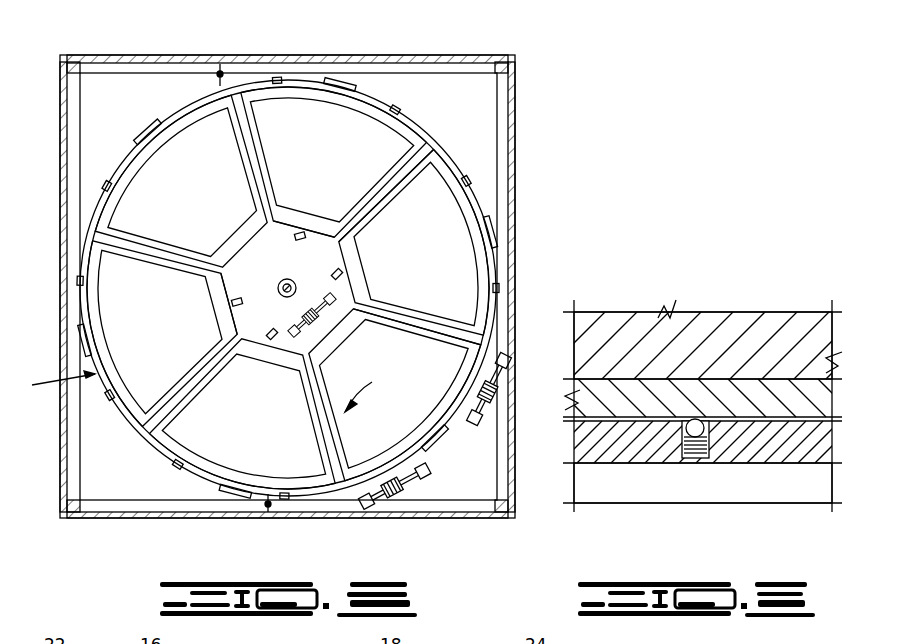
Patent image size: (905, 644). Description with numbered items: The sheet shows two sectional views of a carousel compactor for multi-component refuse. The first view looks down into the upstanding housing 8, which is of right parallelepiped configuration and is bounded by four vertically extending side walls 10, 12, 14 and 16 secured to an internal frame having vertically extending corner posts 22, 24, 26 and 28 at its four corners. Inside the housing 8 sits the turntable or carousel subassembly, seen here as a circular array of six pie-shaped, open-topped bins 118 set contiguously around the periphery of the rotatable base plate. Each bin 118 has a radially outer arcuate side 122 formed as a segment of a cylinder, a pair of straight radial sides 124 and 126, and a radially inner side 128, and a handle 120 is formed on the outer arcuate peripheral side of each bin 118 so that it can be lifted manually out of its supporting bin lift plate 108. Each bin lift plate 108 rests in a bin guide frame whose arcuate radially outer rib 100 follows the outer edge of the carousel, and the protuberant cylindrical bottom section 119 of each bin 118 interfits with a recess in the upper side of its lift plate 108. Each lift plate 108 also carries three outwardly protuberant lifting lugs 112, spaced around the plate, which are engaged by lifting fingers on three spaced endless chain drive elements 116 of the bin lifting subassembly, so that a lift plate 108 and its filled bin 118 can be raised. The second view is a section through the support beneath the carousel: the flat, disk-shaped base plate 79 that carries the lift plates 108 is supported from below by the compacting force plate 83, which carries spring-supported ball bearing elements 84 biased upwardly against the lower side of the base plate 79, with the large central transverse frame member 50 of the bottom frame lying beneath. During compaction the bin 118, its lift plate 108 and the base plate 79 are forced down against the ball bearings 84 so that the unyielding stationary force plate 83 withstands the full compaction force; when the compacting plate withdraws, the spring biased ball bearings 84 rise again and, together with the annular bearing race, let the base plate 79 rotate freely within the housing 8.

In FIG. 5, the housing 8 is at (412, 51).
In FIG. 5, the side wall 10 is at (60, 262).
In FIG. 5, the side wall 12 is at (288, 58).
In FIG. 5, the side wall 14 is at (515, 154).
In FIG. 5, the side wall 16 is at (200, 518).
In FIG. 5, the corner post 22 is at (76, 60).
In FIG. 5, the corner post 24 is at (501, 62).
In FIG. 5, the corner post 26 is at (503, 518).
In FIG. 5, the corner post 28 is at (73, 518).
In FIG. 5, the arcuate radially outer rib 100 is at (130, 420).
In FIG. 5, the lifting lug 112 is at (106, 181).
In FIG. 5, the endless chain drive element 116 is at (300, 310).
In FIG. 5, the open-topped bin 118 is at (220, 64).
In FIG. 5, the bottom section 119 is at (217, 216).
In FIG. 5, the handle 120 is at (140, 130).
In FIG. 5, the radially outer arcuate side 122 is at (188, 118).
In FIG. 5, the straight radial side 124 is at (150, 242).
In FIG. 5, the straight radial side 126 is at (380, 168).
In FIG. 5, the radially inner side 128 is at (305, 206).
In FIG. 9, the bin lift plate 108 is at (742, 316).
In FIG. 9, the base plate 79 is at (655, 410).
In FIG. 9, the compacting force plate 83 is at (783, 454).
In FIG. 9, the central transverse frame member 50 is at (636, 497).
In FIG. 9, the spring-supported ball bearing element 84 is at (698, 420).